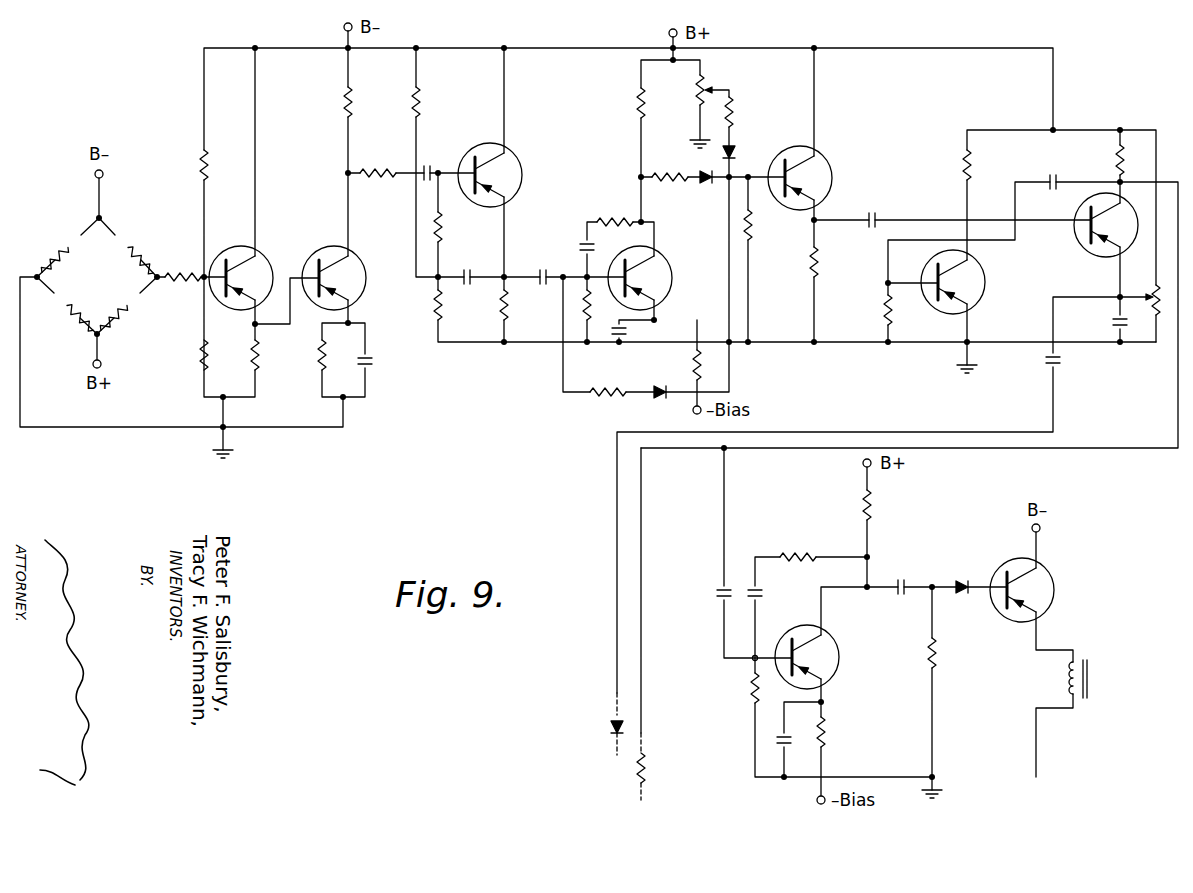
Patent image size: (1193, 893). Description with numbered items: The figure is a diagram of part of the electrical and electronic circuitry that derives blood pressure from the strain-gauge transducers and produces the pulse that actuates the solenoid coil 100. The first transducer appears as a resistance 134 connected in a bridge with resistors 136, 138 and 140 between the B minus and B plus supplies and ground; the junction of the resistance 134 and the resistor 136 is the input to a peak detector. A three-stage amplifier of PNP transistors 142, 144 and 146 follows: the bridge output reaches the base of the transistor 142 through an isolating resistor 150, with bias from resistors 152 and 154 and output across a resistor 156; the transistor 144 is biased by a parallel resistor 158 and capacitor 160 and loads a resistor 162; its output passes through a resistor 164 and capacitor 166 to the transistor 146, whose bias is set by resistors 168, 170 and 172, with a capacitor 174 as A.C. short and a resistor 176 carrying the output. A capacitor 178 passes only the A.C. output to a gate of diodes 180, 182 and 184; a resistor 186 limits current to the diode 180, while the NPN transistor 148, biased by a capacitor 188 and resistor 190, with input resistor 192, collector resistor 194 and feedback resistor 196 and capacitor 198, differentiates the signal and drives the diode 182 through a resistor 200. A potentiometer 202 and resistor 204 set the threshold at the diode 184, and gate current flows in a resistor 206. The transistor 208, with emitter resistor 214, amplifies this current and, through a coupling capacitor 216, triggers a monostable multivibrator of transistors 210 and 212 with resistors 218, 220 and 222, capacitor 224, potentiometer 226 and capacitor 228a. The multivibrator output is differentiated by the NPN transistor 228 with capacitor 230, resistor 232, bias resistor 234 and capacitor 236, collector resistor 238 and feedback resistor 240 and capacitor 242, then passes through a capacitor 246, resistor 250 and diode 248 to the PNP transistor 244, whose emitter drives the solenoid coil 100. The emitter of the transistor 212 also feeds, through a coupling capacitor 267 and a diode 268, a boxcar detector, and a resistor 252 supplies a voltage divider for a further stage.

The solenoid coil 100 is at (1084, 700).
The resistance 134 is at (129, 249).
The resistor 136 is at (124, 318).
The resistor 138 is at (76, 318).
The resistor 140 is at (68, 247).
The transistor 142 is at (262, 257).
The transistor 144 is at (364, 289).
The transistor 146 is at (519, 183).
The transistor 148 is at (665, 270).
The isolating resistor 150 is at (168, 284).
The resistor 152 is at (204, 166).
The resistor 154 is at (198, 356).
The resistor 156 is at (260, 360).
The resistor 158 is at (318, 375).
The capacitor 160 is at (370, 366).
The resistor 162 is at (354, 103).
The resistor 164 is at (377, 181).
The capacitor 166 is at (431, 170).
The resistor 168 is at (446, 233).
The resistor 170 is at (444, 312).
The resistor 172 is at (422, 103).
The capacitor 174 is at (472, 267).
The resistor 176 is at (508, 312).
The capacitor 178 is at (540, 272).
The diode 180 is at (668, 381).
The diode 182 is at (704, 186).
The diode 184 is at (738, 150).
The resistor 186 is at (597, 400).
The capacitor 188 is at (628, 333).
The resistor 190 is at (705, 366).
The resistor 192 is at (589, 310).
The resistor 194 is at (634, 105).
The resistor 196 is at (617, 213).
The capacitor 198 is at (583, 244).
The resistor 200 is at (670, 185).
The potentiometer 202 is at (709, 88).
The resistor 204 is at (738, 112).
The resistor 206 is at (752, 242).
The transistor 208 is at (828, 183).
The transistor 210 is at (985, 278).
The transistor 212 is at (1074, 212).
The resistor 214 is at (820, 270).
The coupling capacitor 216 is at (878, 215).
The resistor 218 is at (972, 177).
The resistor 220 is at (896, 322).
The resistor 222 is at (1117, 160).
The capacitor 224 is at (1112, 335).
The potentiometer 226 is at (1160, 340).
The transistor 228 is at (840, 666).
The capacitor 228a is at (1053, 177).
The capacitor 230 is at (720, 593).
The resistor 232 is at (750, 702).
The resistor 234 is at (830, 740).
The capacitor 236 is at (782, 750).
The resistor 238 is at (877, 510).
The resistor 240 is at (808, 552).
The capacitor 242 is at (762, 596).
The transistor 244 is at (1052, 585).
The capacitor 246 is at (905, 590).
The diode 248 is at (963, 598).
The resistor 250 is at (940, 665).
The resistor 252 is at (650, 775).
The coupling capacitor 267 is at (1048, 366).
The diode 268 is at (604, 732).